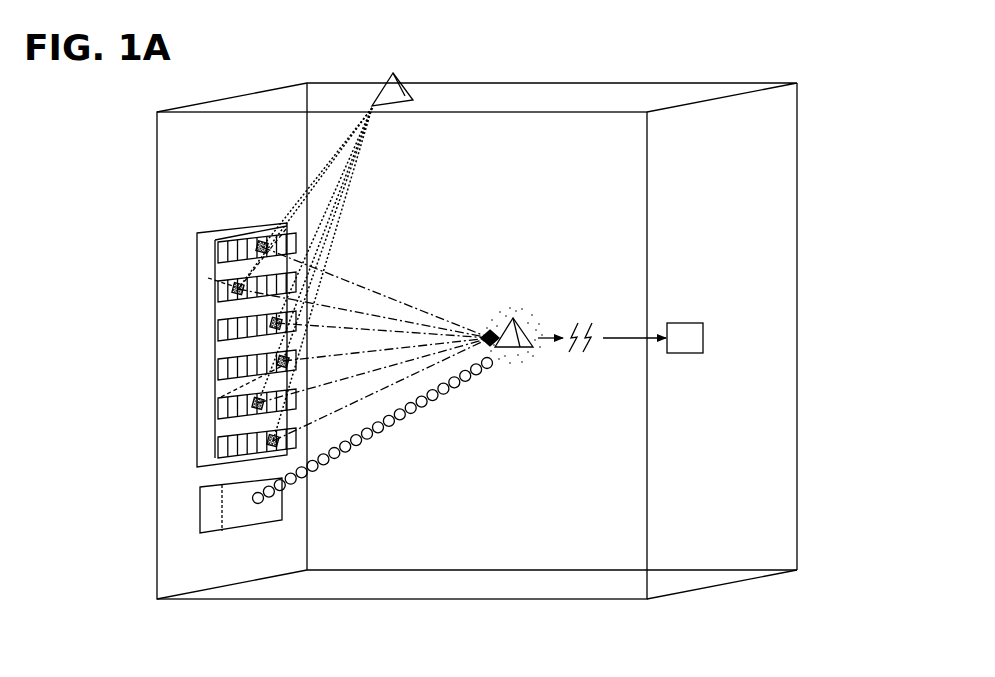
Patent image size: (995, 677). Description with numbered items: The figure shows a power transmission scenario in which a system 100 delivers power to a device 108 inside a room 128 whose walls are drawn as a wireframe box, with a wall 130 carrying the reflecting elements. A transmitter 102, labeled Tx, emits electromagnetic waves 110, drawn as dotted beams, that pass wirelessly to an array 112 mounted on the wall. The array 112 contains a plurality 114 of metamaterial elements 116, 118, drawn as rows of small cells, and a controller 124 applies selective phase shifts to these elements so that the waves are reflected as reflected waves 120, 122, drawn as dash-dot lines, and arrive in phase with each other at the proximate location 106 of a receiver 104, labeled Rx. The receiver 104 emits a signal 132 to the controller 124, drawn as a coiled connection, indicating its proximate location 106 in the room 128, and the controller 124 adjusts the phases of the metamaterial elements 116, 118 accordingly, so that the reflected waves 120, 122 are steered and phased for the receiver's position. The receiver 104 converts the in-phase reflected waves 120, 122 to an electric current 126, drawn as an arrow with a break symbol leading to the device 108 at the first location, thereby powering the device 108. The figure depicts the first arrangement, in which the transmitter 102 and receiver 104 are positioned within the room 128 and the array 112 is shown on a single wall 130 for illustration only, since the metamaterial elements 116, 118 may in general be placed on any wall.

The system 100 is at (791, 663).
The transmitter 102 is at (414, 97).
The receiver 104 is at (509, 348).
The proximate location 106 is at (534, 300).
The device 108 is at (704, 338).
The electromagnetic waves 110 is at (351, 128).
The array 112 is at (207, 340).
The plurality of metamaterial elements 114 is at (208, 278).
The metamaterial element 116 is at (286, 229).
The metamaterial element 118 is at (221, 397).
The reflected wave 120 is at (412, 300).
The reflected wave 122 is at (343, 383).
The controller 124 is at (208, 517).
The electric current 126 is at (579, 358).
The room 128 is at (757, 217).
The wall 130 is at (156, 163).
The signal 132 is at (381, 426).